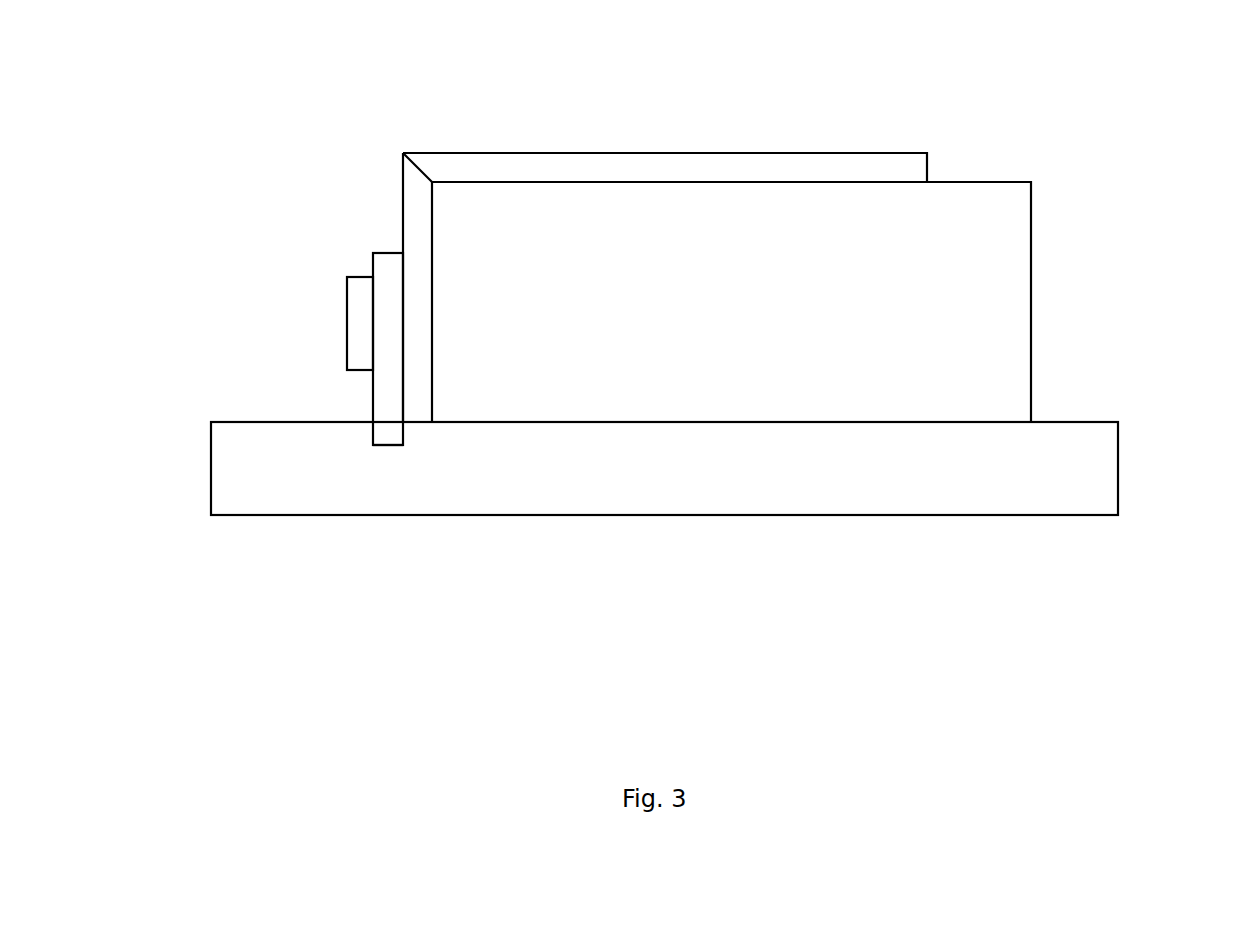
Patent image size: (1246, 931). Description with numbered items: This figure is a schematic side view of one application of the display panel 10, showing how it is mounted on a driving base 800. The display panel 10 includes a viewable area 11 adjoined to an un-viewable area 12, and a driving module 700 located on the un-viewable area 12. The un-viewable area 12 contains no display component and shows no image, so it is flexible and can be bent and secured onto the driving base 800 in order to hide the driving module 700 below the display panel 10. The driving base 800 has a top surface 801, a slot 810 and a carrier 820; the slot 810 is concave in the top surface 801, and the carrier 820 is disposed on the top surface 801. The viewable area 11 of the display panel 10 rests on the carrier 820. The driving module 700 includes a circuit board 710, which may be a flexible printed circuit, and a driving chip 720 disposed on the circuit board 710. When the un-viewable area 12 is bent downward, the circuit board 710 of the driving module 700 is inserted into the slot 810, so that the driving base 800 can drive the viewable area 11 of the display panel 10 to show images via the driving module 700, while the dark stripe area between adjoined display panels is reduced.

The display panel 10 is at (635, 222).
The viewable area 11 is at (440, 163).
The un-viewable area 12 is at (381, 250).
The driving module 700 is at (258, 349).
The circuit board 710 is at (388, 406).
The driving chip 720 is at (358, 346).
The driving base 800 is at (942, 483).
The top surface 801 is at (1073, 419).
The slot 810 is at (387, 448).
The carrier 820 is at (1006, 329).